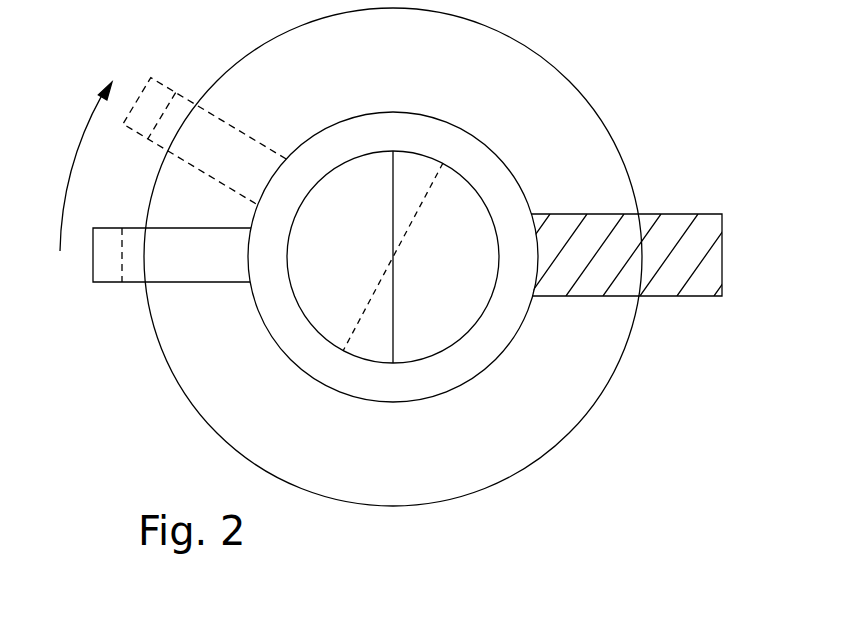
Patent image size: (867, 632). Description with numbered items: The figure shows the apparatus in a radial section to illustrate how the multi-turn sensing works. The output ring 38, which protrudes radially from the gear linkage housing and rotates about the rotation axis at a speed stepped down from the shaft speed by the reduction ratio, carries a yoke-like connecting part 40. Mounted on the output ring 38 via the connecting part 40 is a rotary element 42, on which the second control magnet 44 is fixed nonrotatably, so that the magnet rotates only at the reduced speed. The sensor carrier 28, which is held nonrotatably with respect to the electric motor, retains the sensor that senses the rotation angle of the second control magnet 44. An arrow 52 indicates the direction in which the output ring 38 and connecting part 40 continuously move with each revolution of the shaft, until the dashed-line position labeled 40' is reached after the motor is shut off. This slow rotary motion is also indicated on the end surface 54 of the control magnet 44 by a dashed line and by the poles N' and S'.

The sensor carrier 28 is at (690, 288).
The output ring 38 is at (600, 172).
The connecting part 40 is at (172, 295).
The connecting part in displaced position 40' is at (204, 109).
The rotary element 42 is at (447, 387).
The second control magnet 44 is at (458, 330).
The arrow 52 is at (95, 112).
The end surface 54 is at (313, 300).